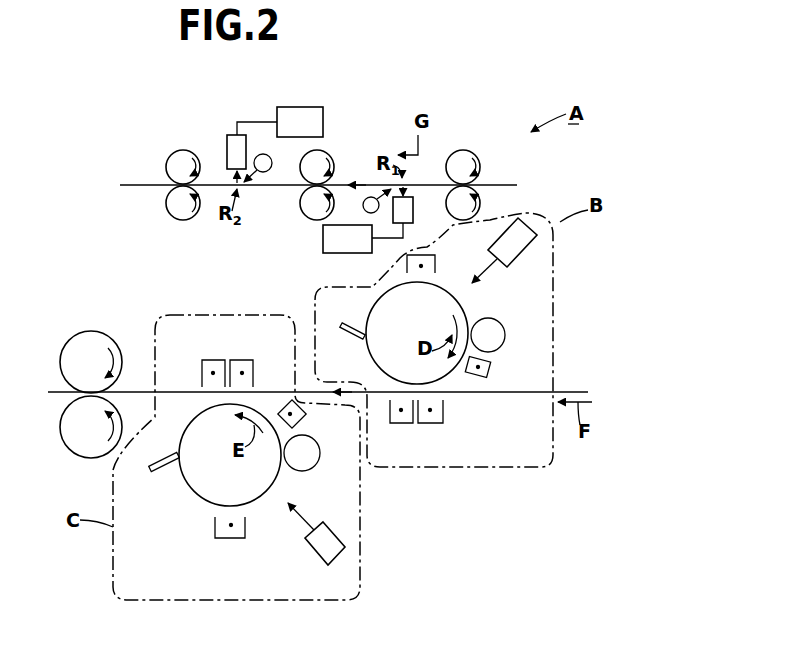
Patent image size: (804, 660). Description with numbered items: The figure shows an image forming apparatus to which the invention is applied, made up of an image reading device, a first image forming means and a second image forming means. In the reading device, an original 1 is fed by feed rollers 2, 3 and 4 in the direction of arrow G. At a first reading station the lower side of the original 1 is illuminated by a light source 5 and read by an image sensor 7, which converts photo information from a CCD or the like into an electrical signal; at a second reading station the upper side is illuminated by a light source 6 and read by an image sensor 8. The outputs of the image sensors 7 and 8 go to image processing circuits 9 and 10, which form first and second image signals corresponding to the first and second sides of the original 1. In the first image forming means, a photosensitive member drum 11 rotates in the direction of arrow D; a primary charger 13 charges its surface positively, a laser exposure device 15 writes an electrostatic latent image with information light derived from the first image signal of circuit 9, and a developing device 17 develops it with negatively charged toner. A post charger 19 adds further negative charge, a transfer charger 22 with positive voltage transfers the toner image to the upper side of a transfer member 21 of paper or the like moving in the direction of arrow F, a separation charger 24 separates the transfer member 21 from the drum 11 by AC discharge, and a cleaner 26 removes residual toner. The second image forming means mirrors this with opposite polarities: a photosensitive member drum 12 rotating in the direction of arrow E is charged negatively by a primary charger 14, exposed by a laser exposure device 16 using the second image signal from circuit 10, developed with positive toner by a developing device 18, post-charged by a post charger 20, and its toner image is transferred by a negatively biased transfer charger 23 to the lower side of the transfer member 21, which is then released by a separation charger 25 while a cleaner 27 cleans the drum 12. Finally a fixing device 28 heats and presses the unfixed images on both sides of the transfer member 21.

The original 1 is at (508, 183).
The feed roller 2 is at (471, 157).
The feed roller 3 is at (332, 160).
The feed roller 4 is at (170, 155).
The light source 5 is at (362, 205).
The light source 6 is at (270, 157).
The image sensor 7 is at (413, 212).
The image sensor 8 is at (227, 135).
The image processing circuit 9 is at (323, 240).
The image processing circuit 10 is at (323, 122).
The photosensitive member drum 11 is at (373, 308).
The photosensitive member drum 12 is at (195, 498).
The primary charger 13 is at (435, 262).
The primary charger 14 is at (245, 528).
The laser exposure device 15 is at (533, 238).
The laser exposure device 16 is at (345, 550).
The developing device 17 is at (496, 322).
The developing device 18 is at (310, 470).
The post charger 19 is at (491, 368).
The post charger 20 is at (304, 415).
The transfer member 21 is at (572, 392).
The transfer charger 22 is at (436, 424).
The transfer charger 23 is at (242, 360).
The separation charger 24 is at (400, 424).
The separation charger 25 is at (202, 372).
The cleaner 26 is at (348, 334).
The cleaner 27 is at (153, 473).
The fixing device 28 is at (97, 332).